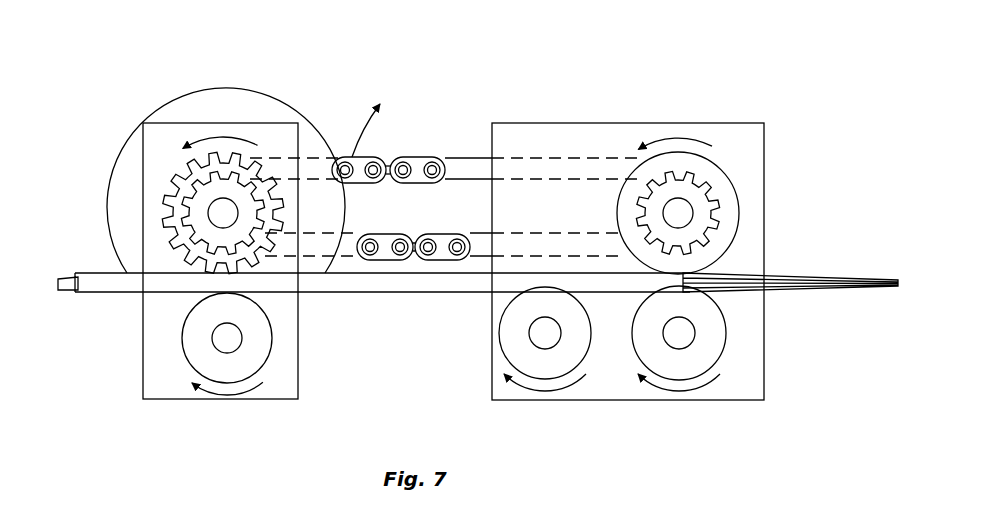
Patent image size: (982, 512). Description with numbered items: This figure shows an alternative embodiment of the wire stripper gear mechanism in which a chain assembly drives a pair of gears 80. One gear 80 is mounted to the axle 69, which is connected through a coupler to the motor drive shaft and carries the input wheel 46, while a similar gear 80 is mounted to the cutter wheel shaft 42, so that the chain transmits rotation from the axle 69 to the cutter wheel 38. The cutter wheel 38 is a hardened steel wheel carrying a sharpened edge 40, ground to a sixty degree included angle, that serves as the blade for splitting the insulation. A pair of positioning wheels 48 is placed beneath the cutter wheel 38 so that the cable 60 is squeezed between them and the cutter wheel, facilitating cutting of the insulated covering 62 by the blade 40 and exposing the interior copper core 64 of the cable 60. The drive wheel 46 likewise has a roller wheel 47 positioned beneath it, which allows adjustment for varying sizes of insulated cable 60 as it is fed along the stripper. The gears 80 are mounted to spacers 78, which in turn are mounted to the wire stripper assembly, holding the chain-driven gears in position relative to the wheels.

The cutter wheel 38 is at (728, 225).
The sharpened edge 40 is at (728, 175).
The cutter wheel shaft 42 is at (693, 207).
The input wheel 46 is at (188, 168).
The roller wheel 47 is at (187, 362).
The positioning wheel 48 is at (587, 360).
The cable 60 is at (341, 303).
The insulated covering 62 is at (90, 293).
The copper core 64 is at (70, 270).
The axle 69 is at (217, 198).
The spacer 78 is at (248, 400).
The gear 80 is at (235, 193).